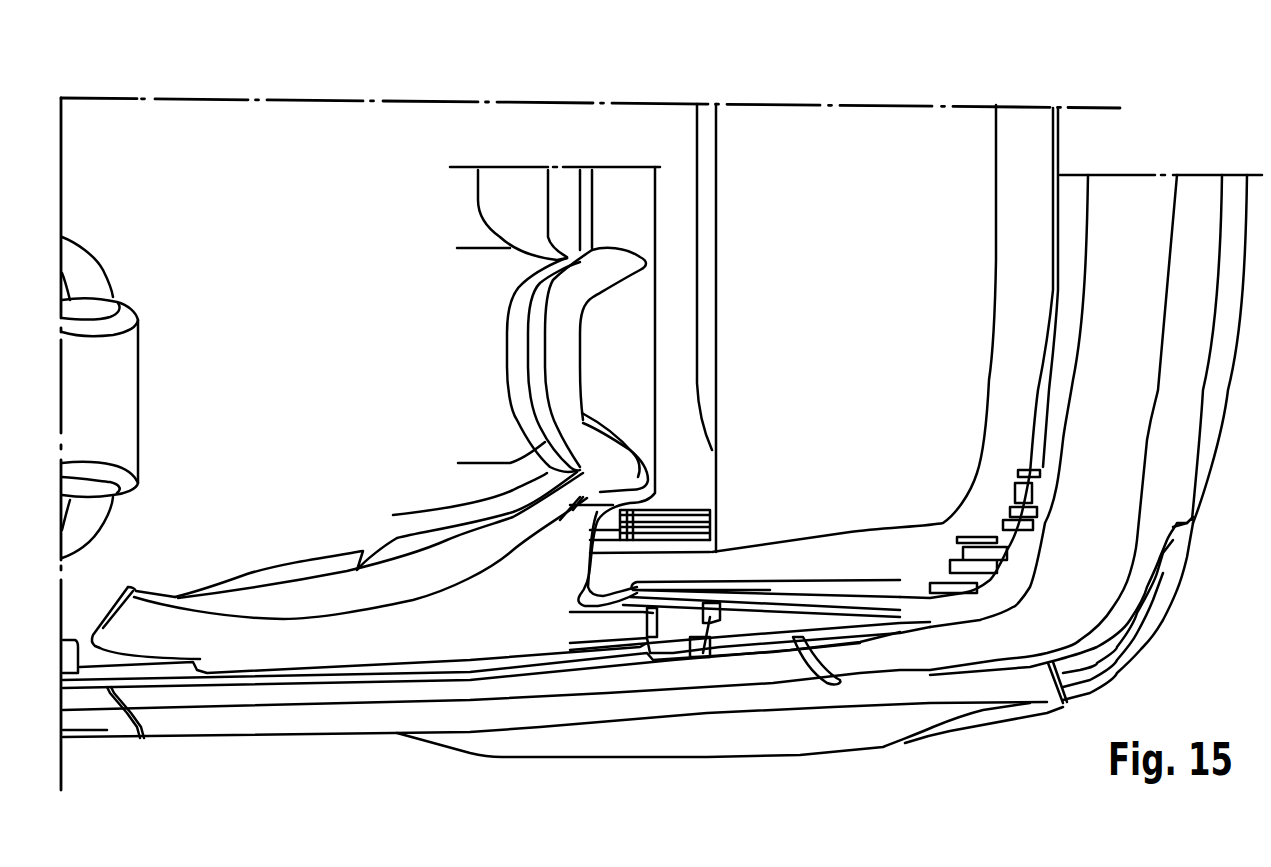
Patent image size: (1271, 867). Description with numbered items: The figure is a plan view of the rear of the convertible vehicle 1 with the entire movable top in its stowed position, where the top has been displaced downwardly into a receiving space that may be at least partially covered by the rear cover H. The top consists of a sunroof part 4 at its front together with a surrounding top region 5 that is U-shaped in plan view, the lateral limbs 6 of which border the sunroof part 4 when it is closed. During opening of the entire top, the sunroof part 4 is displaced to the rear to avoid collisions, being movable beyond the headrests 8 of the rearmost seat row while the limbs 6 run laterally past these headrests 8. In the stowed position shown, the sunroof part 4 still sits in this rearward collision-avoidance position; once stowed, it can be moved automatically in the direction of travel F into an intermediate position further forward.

The convertible vehicle 1 is at (393, 137).
The sunroof part 4 is at (824, 293).
The surrounding top region 5 is at (929, 568).
The limbs 6 is at (613, 615).
The headrests 8 is at (538, 360).
The rear cover H is at (1132, 371).
The direction of travel F is at (217, 755).